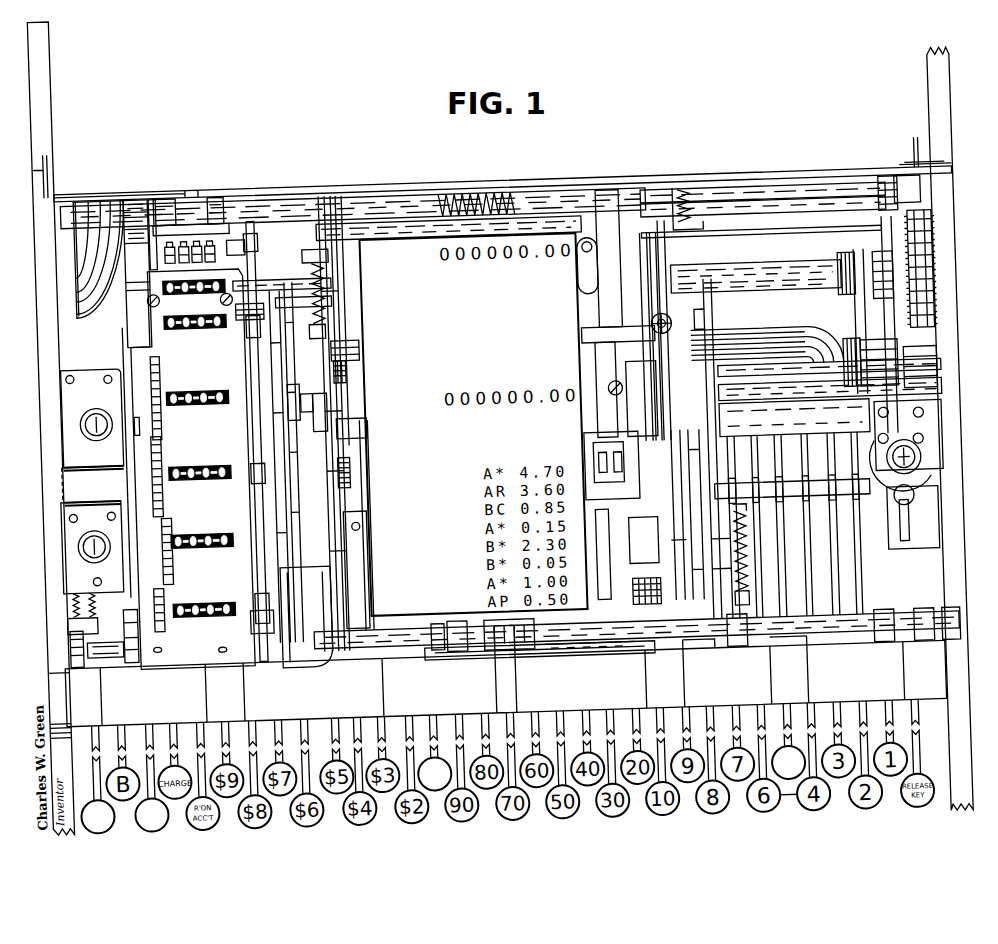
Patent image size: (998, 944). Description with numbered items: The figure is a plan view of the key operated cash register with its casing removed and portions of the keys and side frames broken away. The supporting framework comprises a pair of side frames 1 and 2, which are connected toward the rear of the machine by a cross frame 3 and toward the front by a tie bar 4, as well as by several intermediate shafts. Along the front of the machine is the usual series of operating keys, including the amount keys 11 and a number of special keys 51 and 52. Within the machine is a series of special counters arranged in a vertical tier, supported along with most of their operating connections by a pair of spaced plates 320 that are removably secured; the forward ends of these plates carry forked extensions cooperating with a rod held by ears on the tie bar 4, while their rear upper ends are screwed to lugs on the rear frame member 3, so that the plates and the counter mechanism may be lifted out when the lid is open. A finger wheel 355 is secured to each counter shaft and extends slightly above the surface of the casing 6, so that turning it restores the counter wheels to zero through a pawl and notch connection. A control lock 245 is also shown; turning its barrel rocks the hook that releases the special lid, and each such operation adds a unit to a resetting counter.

The side frame 1 is at (33, 444).
The side frame 2 is at (945, 260).
The cross frame 3 is at (558, 195).
The tie bar 4 is at (890, 702).
The casing 6 is at (222, 512).
The amount keys 11 is at (416, 803).
The special key 51 is at (95, 815).
The special key 52 is at (149, 815).
The control lock 245 is at (917, 476).
The supporting plates 320 is at (247, 239).
The finger wheel 355 is at (154, 460).